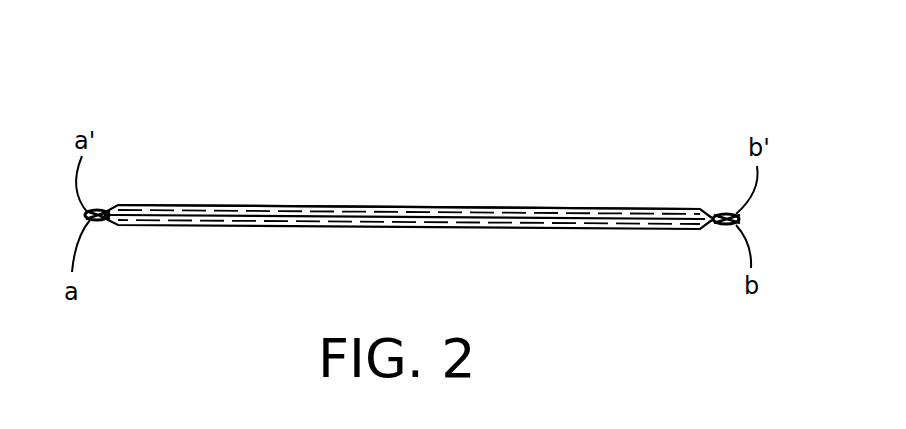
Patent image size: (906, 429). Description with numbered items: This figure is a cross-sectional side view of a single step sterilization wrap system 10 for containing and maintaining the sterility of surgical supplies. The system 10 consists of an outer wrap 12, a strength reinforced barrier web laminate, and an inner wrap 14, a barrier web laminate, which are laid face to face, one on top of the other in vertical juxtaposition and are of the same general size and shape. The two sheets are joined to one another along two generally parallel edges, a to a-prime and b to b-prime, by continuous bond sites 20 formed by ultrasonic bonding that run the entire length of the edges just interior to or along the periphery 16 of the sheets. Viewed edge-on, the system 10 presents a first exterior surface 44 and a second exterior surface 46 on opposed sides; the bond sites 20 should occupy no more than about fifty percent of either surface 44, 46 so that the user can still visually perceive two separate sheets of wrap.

The sterilization system 10 is at (313, 128).
The outer wrap 12 is at (288, 230).
The inner wrap 14 is at (392, 205).
The periphery 16 is at (752, 219).
The bond sites 20 is at (106, 212).
The first exterior surface 44 is at (584, 197).
The second exterior surface 46 is at (570, 237).